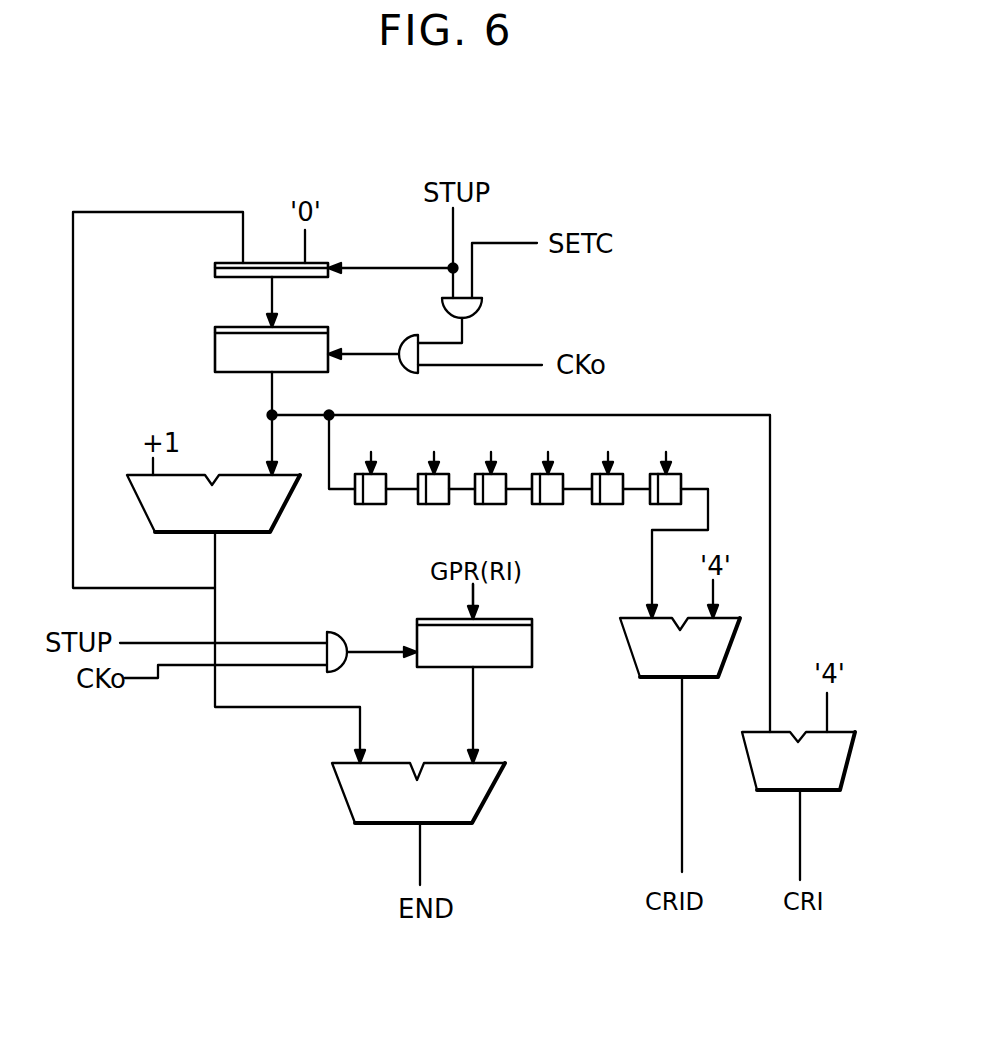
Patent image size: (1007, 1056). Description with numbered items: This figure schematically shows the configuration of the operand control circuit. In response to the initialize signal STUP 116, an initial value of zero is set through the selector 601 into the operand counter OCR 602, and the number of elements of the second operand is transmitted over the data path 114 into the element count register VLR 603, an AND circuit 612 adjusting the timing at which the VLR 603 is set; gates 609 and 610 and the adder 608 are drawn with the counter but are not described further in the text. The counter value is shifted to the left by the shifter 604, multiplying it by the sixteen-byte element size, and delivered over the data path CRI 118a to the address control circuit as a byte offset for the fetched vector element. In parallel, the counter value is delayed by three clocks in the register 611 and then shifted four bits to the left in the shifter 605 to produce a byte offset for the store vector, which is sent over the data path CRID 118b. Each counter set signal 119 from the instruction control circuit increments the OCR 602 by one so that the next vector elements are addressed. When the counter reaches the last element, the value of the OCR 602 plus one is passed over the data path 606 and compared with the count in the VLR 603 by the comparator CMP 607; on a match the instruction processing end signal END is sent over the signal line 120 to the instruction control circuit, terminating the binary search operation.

The selector 601 is at (215, 276).
The operand counter OCR 602 is at (215, 360).
The initialize signal STUP 116 is at (453, 216).
The counter set signal 119 is at (512, 245).
The AND gate 609 is at (482, 305).
The AND gate 610 is at (405, 370).
The adder (ADD) 608 is at (280, 515).
The AND circuit 612 is at (330, 632).
The data path 114 is at (480, 607).
The element count register VLR 603 is at (512, 667).
The data path 606 is at (235, 707).
The comparator CMP 607 is at (345, 800).
The signal line 120 is at (420, 850).
The register 611 is at (490, 504).
The shifter 605 is at (645, 677).
The data path CRID 118b is at (675, 830).
The shifter 604 is at (757, 790).
The data path CRI 118a is at (800, 836).